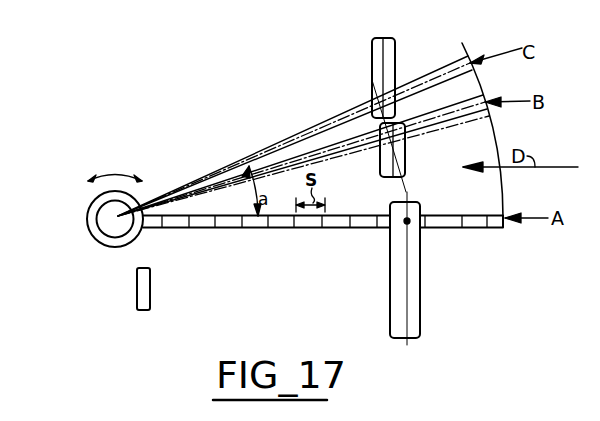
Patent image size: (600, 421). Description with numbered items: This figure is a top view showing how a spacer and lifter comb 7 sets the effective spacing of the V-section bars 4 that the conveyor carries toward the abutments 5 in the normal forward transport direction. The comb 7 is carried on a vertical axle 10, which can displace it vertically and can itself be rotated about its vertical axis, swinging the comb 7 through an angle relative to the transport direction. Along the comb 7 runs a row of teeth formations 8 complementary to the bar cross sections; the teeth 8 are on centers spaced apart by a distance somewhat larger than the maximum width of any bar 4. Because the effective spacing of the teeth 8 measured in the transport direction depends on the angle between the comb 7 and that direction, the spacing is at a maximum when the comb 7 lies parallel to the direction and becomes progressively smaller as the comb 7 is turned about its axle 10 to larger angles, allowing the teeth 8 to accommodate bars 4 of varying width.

The V-section bar 4 is at (395, 62).
The abutment 5 is at (140, 292).
The spacer and lifter comb 7 is at (289, 148).
The teeth formation 8 is at (198, 228).
The vertical axle 10 is at (88, 221).